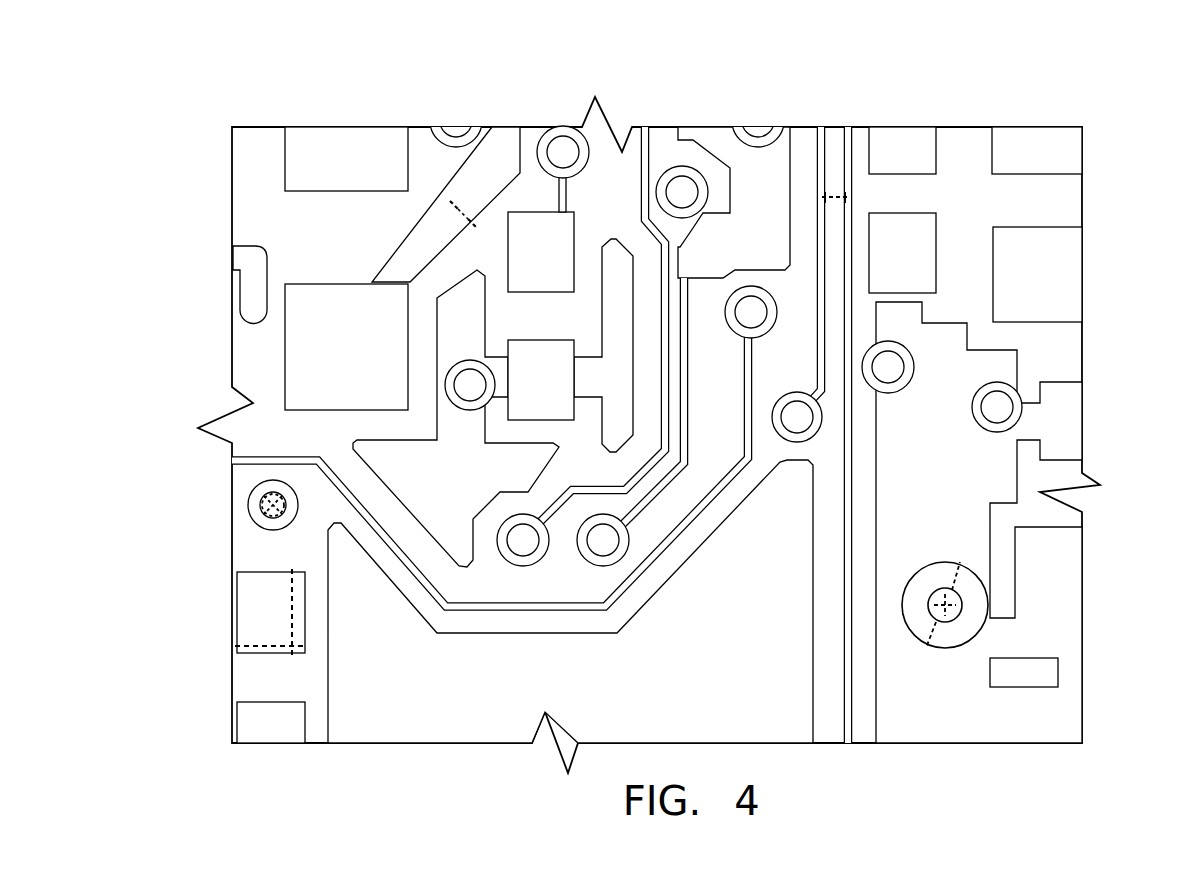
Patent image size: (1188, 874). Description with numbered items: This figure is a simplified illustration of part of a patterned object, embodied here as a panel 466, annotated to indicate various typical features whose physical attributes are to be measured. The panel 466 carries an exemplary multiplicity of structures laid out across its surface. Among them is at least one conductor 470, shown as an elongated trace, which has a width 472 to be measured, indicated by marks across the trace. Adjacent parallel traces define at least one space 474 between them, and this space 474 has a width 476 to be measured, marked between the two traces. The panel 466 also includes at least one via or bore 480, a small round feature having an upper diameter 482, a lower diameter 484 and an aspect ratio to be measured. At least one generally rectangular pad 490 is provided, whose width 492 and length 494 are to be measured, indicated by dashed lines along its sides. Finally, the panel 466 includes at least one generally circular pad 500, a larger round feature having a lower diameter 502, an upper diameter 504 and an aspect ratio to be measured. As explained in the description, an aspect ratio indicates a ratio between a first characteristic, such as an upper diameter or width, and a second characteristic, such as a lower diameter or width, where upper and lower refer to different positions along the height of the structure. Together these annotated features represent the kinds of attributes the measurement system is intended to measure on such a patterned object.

The panel 466 is at (258, 157).
The conductor 470 is at (490, 185).
The width 472 is at (463, 219).
The space 474 is at (835, 172).
The width 476 is at (835, 202).
The via or bore 480 is at (258, 503).
The upper diameter 482 is at (267, 517).
The lower diameter 484 is at (283, 510).
The generally rectangular pad 490 is at (252, 607).
The width 492 is at (263, 647).
The length 494 is at (292, 597).
The generally circular pad 500 is at (922, 626).
The lower diameter 502 is at (955, 580).
The upper diameter 504 is at (953, 610).